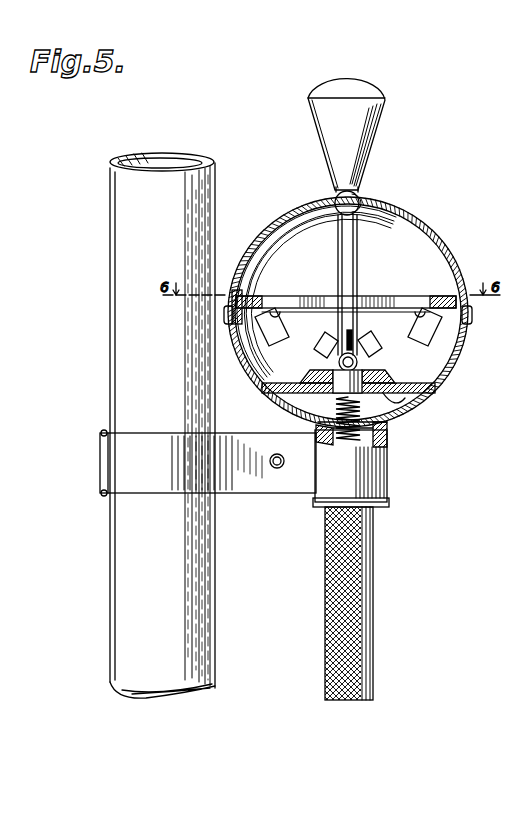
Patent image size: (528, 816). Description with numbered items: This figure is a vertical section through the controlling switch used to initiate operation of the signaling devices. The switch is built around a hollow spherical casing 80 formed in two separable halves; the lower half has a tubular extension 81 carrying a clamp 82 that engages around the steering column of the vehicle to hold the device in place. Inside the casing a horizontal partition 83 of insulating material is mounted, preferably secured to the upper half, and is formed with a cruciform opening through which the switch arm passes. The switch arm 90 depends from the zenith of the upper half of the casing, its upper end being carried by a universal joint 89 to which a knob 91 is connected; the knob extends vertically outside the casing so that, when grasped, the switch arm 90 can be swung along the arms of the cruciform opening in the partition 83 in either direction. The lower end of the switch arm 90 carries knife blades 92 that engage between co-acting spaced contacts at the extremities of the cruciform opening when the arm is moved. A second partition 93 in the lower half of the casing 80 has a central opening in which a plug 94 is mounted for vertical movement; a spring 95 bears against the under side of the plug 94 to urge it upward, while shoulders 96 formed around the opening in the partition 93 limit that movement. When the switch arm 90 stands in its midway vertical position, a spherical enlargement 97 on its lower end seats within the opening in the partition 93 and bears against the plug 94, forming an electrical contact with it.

The hollow spherical casing 80 is at (458, 244).
The tubular extension 81 is at (388, 433).
The clamp 82 is at (273, 484).
The horizontal partition 83 is at (446, 294).
The universal joint 89 is at (356, 200).
The switch arm 90 is at (346, 267).
The knob 91 is at (350, 356).
The knife blades 92 is at (381, 350).
The partition 93 is at (405, 398).
The plug 94 is at (405, 378).
The spring 95 is at (333, 402).
The shoulders 96 is at (336, 366).
The spherical enlargement 97 is at (362, 122).